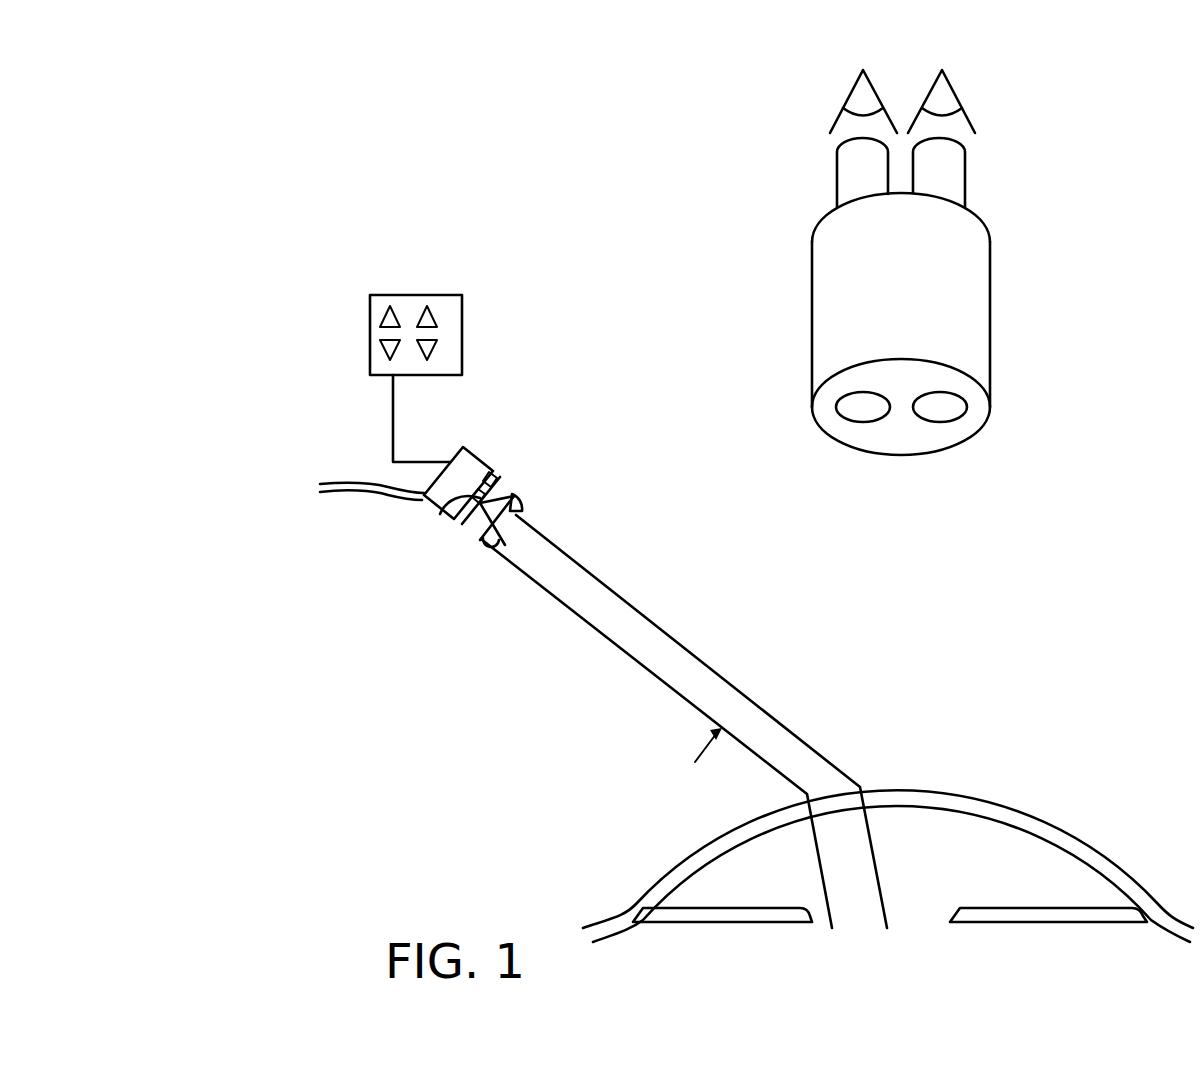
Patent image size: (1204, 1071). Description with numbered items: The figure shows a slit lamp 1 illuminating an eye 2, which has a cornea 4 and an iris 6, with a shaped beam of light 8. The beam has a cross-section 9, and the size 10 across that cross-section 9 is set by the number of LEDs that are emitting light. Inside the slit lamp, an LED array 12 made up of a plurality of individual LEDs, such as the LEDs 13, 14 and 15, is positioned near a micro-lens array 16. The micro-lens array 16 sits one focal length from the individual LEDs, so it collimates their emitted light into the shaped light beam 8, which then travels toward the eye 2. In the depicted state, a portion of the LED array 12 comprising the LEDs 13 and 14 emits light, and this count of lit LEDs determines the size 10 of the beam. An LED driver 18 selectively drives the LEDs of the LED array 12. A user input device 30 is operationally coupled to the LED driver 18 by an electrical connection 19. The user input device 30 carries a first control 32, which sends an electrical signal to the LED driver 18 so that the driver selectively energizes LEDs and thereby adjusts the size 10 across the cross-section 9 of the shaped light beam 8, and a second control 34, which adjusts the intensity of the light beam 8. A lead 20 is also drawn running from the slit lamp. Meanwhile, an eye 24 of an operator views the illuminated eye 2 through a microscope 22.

The slit lamp 1 is at (273, 337).
The eye 2 is at (1083, 789).
The cornea 4 is at (1068, 842).
The iris 6 is at (1050, 913).
The shaped beam of light 8 is at (813, 762).
The cross-section 9 is at (728, 700).
The size 10 is at (747, 690).
The LED array 12 is at (497, 474).
The LED 13 is at (470, 532).
The LED 14 is at (442, 504).
The LED 15 is at (489, 471).
The micro-lens array 16 is at (522, 497).
The LED driver 18 is at (475, 468).
The electrical connection 19 is at (393, 408).
The cable 20 is at (362, 481).
The microscope 22 is at (990, 310).
The eye of an operator 24 is at (957, 97).
The user input device 30 is at (455, 323).
The first control 32 is at (430, 304).
The second control 34 is at (396, 305).